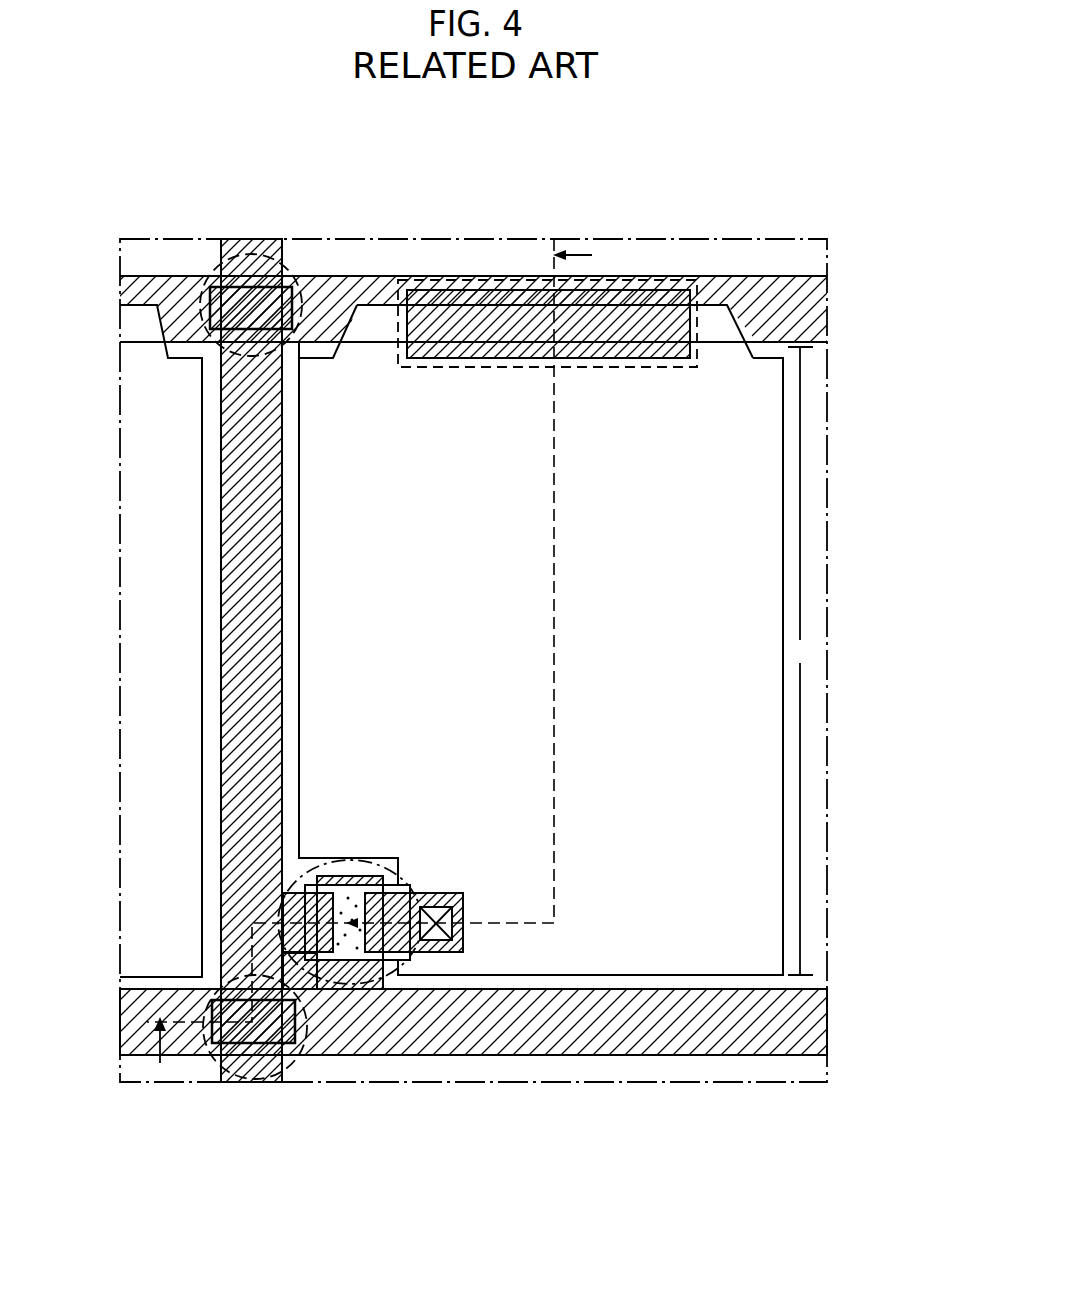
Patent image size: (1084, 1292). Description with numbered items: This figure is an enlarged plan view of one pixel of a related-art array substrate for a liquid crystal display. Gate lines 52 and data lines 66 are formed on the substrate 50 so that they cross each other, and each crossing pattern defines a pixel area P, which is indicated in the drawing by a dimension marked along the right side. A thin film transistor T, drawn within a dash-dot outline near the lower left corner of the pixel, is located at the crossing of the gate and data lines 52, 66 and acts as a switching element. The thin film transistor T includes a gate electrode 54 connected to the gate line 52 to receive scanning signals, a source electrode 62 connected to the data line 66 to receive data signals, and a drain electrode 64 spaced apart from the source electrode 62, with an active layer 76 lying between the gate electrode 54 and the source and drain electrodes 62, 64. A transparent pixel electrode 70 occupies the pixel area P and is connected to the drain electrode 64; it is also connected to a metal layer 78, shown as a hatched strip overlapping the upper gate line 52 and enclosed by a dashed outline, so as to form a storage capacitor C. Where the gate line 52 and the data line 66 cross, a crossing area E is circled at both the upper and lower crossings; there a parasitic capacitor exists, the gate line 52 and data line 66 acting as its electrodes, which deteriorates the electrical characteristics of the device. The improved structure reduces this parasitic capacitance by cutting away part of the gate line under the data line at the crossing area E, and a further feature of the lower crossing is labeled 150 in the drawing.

The substrate 50 is at (827, 688).
The gate line 52 is at (730, 276).
The gate electrode 54 is at (366, 885).
The source electrode 62 is at (325, 876).
The drain electrode 64 is at (457, 892).
The data line 66 is at (221, 633).
The pixel electrode 70 is at (783, 763).
The active layer 76 is at (399, 880).
The metal layer 78 is at (598, 367).
The crossing portion of gate and data lines 150 is at (307, 1050).
The crossing area E is at (258, 253).
The storage capacitor C is at (475, 368).
The thin film transistor T is at (391, 862).
The pixel area P is at (800, 661).